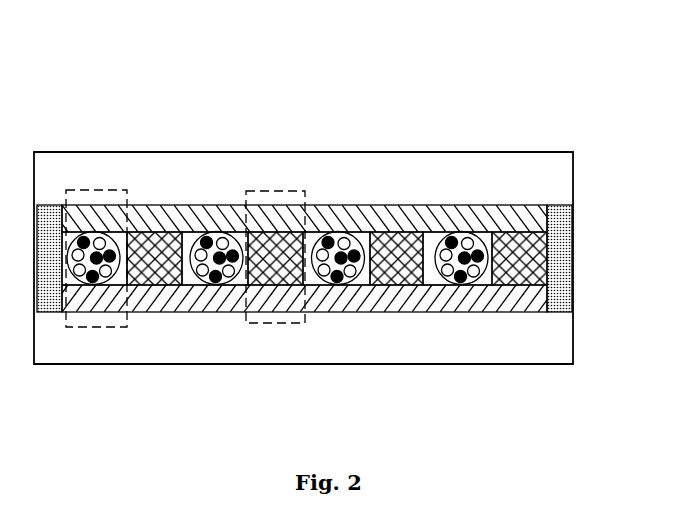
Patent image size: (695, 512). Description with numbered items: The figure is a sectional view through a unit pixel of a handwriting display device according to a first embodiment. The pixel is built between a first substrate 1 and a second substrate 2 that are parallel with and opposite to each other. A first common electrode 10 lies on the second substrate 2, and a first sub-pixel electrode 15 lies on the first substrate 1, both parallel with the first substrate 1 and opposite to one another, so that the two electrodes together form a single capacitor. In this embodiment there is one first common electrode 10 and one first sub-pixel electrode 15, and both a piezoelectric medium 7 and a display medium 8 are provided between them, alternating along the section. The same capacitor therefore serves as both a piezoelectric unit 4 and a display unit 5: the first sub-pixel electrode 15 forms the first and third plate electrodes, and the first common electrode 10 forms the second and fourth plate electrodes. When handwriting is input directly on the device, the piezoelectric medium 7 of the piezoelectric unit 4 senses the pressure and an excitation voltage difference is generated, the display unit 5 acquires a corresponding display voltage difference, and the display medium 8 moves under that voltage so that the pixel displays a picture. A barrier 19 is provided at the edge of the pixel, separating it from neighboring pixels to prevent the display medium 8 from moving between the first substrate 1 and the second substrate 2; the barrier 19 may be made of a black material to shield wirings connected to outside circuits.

The first substrate 1 is at (487, 338).
The second substrate 2 is at (357, 170).
The piezoelectric unit 4 is at (282, 327).
The display unit 5 is at (102, 327).
The piezoelectric medium 7 is at (400, 277).
The display medium 8 is at (338, 268).
The first common electrode 10 is at (415, 218).
The first sub-pixel electrode 15 is at (177, 300).
The barrier 19 is at (558, 313).